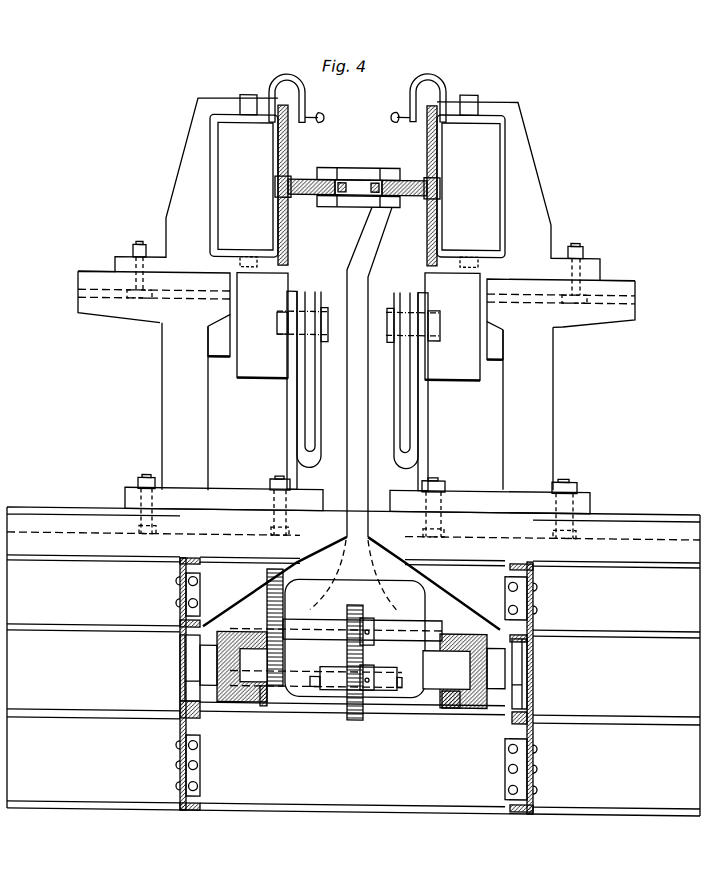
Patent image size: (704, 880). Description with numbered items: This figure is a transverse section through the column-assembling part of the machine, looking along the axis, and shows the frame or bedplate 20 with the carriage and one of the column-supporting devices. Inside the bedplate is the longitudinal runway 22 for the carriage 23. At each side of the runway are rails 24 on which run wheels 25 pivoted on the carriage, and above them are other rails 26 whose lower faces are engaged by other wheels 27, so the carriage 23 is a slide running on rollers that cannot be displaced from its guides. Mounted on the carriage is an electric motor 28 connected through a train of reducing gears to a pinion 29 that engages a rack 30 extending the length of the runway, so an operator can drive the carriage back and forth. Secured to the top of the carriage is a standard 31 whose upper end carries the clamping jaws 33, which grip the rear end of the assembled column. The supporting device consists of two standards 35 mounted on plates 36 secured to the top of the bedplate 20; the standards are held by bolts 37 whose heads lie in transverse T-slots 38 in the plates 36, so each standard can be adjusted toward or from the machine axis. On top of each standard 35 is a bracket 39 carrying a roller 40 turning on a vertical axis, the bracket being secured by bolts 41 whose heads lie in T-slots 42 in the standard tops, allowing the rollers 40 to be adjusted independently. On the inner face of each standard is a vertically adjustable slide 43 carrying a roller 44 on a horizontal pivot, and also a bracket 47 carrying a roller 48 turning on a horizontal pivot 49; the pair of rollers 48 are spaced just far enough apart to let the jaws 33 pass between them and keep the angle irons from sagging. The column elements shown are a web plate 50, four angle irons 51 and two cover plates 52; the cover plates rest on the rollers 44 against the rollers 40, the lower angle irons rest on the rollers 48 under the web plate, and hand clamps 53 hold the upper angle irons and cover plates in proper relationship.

The frame or bedplate 20 is at (353, 573).
The longitudinal runway 22 is at (245, 708).
The carriage 23 is at (470, 708).
The rails 24 is at (533, 722).
The wheels 25 is at (527, 697).
The rails 26 is at (537, 630).
The wheels 27 is at (527, 656).
The electric motor 28 is at (418, 594).
The pinion 29 is at (344, 700).
The rack 30 is at (362, 720).
The standard 31 is at (360, 240).
The clamping jaws 33 is at (345, 158).
The standards 35 is at (553, 396).
The plates 36 is at (660, 518).
The bolts 37 is at (562, 479).
The T-slots 38 is at (617, 535).
The bracket 39 is at (536, 163).
The roller 40 is at (357, 180).
The bolts 41 is at (575, 243).
The T-slots 42 is at (630, 292).
The vertically adjustable slide 43 is at (500, 358).
The roller 44 is at (457, 376).
The bracket 47 is at (428, 454).
The roller 48 is at (405, 401).
The horizontal pivot 49 is at (436, 322).
The web plate 50 is at (437, 189).
The angle irons 51 is at (277, 231).
The cover plates 52 is at (437, 210).
The hand clamps 53 is at (408, 90).